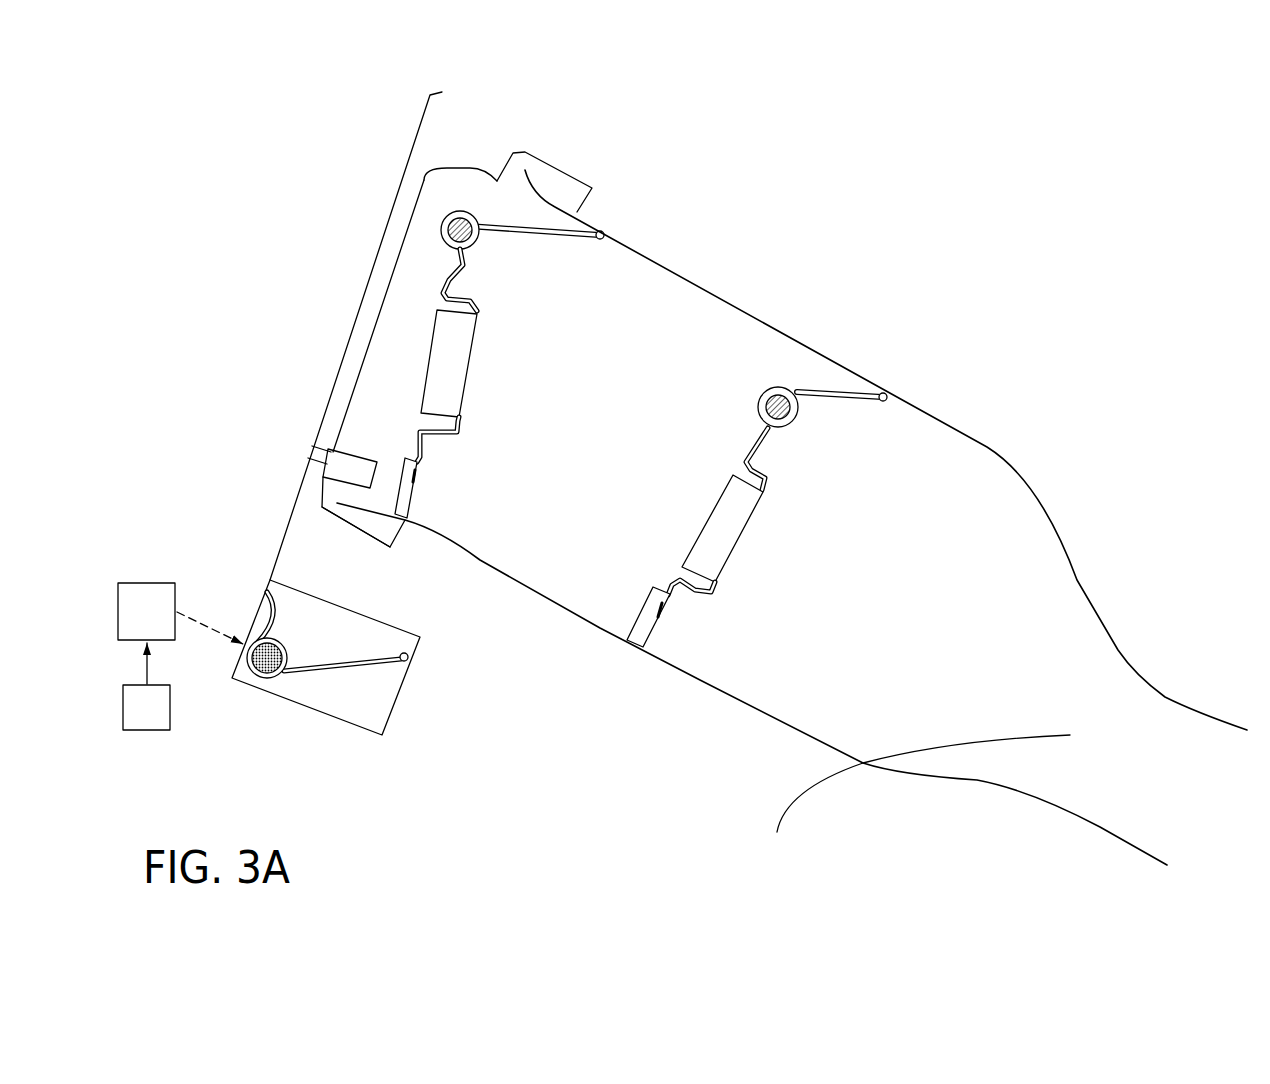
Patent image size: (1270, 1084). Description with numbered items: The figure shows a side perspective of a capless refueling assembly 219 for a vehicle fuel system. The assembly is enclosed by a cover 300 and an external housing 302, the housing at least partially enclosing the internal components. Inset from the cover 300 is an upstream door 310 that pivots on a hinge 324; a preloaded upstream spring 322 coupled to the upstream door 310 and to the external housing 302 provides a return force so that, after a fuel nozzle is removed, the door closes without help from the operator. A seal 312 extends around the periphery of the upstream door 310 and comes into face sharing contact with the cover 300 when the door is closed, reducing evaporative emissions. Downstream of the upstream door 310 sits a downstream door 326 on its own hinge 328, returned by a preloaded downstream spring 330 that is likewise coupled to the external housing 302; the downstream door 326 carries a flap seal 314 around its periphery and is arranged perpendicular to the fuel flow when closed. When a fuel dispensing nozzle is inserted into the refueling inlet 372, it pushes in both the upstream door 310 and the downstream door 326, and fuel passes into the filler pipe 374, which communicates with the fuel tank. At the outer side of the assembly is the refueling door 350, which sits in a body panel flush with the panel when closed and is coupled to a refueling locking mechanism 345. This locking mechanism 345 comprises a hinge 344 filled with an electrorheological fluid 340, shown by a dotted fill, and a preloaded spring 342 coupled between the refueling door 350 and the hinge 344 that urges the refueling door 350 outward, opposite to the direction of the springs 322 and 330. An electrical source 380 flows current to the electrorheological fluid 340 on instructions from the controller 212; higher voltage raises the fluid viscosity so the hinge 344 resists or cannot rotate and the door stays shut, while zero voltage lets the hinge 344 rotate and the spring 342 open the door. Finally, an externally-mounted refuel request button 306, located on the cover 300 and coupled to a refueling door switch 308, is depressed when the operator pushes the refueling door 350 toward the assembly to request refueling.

The refueling assembly 219 is at (823, 233).
The controller 212 is at (130, 719).
The cover 300 is at (396, 262).
The external housing 302 is at (987, 447).
The refuel request button 306 is at (317, 465).
The refueling door switch 308 is at (327, 477).
The upstream door 310 is at (477, 343).
The seal 312 is at (402, 503).
The seal 314 is at (638, 628).
The preloaded upstream spring 322 is at (481, 178).
The hinge 324 is at (458, 228).
The downstream door 326 is at (722, 487).
The hinge 328 is at (778, 388).
The preloaded downstream spring 330 is at (817, 385).
The electrorheological fluid 340 is at (247, 642).
The preloaded spring 342 is at (265, 682).
The hinge 344 is at (277, 645).
The refueling locking mechanism 345 is at (285, 698).
The refueling door 350 is at (328, 390).
The refueling inlet 372 is at (566, 461).
The filler pipe 374 is at (914, 798).
The electrical source 380 is at (130, 623).